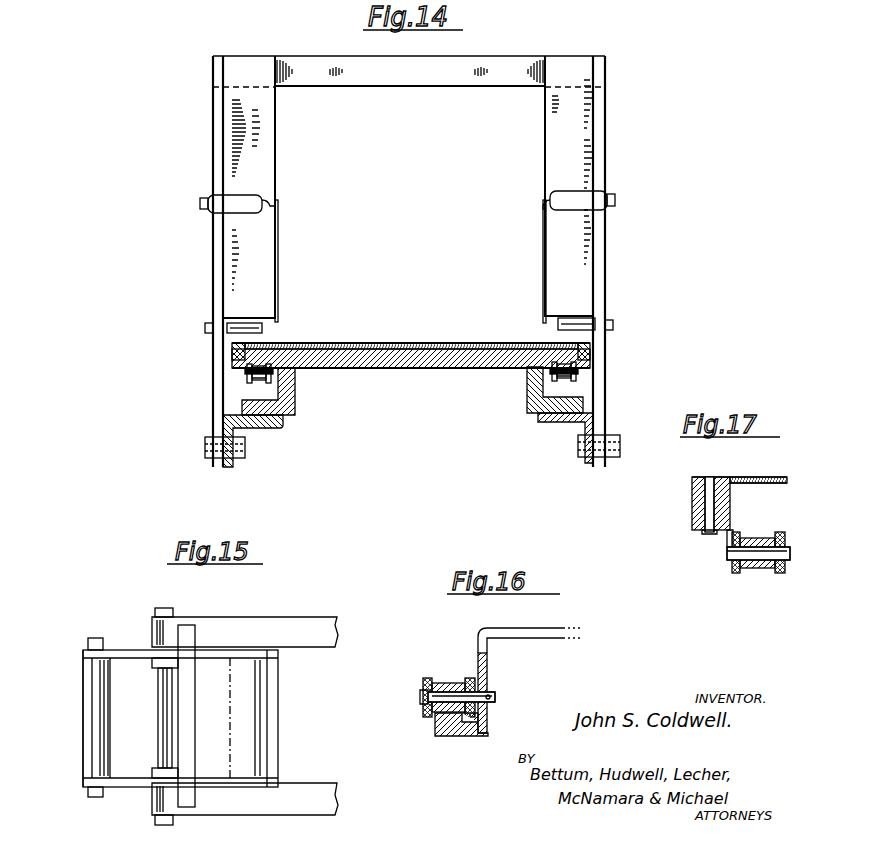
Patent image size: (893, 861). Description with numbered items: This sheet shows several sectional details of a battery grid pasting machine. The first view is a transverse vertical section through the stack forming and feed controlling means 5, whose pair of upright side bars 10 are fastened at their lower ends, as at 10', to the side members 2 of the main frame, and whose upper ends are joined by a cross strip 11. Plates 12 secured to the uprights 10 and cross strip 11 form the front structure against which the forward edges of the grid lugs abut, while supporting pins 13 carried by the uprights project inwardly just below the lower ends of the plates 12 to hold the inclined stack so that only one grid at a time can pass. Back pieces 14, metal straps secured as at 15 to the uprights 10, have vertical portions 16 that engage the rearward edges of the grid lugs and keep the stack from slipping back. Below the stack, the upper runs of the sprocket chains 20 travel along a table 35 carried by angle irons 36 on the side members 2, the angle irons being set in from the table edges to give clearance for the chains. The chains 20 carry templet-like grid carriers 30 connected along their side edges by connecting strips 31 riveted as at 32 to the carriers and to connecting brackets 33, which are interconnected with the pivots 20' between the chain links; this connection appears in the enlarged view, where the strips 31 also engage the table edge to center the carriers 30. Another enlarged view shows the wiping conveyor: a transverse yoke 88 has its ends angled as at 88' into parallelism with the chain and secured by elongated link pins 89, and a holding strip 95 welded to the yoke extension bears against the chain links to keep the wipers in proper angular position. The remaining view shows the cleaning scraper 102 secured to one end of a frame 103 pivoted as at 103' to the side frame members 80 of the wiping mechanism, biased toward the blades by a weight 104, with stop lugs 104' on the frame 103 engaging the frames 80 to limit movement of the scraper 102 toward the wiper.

In FIG. 14, the side members 2 is at (240, 430).
In FIG. 14, the frame 5 is at (610, 112).
In FIG. 14, the upright side bars 10 is at (407, 264).
In FIG. 14, the fastening of uprights 10' is at (385, 458).
In FIG. 14, the cross strip 11 is at (505, 68).
In FIG. 14, the front plates 12 is at (262, 160).
In FIG. 14, the supporting pins 13 is at (240, 325).
In FIG. 14, the back pieces 14 is at (226, 193).
In FIG. 14, the securing portions of back pieces 15 is at (200, 206).
In FIG. 14, the vertical portions of back pieces 16 is at (278, 272).
In FIG. 14, the sprocket chains 20 is at (407, 390).
In FIG. 17, the sprocket chains 20 is at (758, 582).
In FIG. 17, the chain pivots 20' is at (751, 579).
In FIG. 14, the grid carriers 30 is at (275, 343).
In FIG. 17, the grid carriers 30 is at (760, 478).
In FIG. 14, the connecting strips 31 is at (232, 355).
In FIG. 17, the connecting strips 31 is at (732, 503).
In FIG. 14, the rivets 32 is at (247, 371).
In FIG. 17, the rivets 32 is at (706, 499).
In FIG. 17, the connecting brackets 33 is at (727, 532).
In FIG. 14, the table 35 is at (390, 360).
In FIG. 14, the angle irons 36 is at (297, 400).
In FIG. 15, the side frame members 80 is at (297, 637).
In FIG. 16, the yokes 88 is at (529, 625).
In FIG. 16, the angled ends of yokes 88' is at (505, 691).
In FIG. 16, the link pins 89 is at (497, 697).
In FIG. 16, the holding strips 95 is at (450, 737).
In FIG. 15, the scraper 102 is at (270, 733).
In FIG. 15, the frame 103 is at (150, 718).
In FIG. 15, the pivot 103' is at (132, 792).
In FIG. 15, the weight 104 is at (70, 717).
In FIG. 15, the stop lugs 104' is at (201, 716).